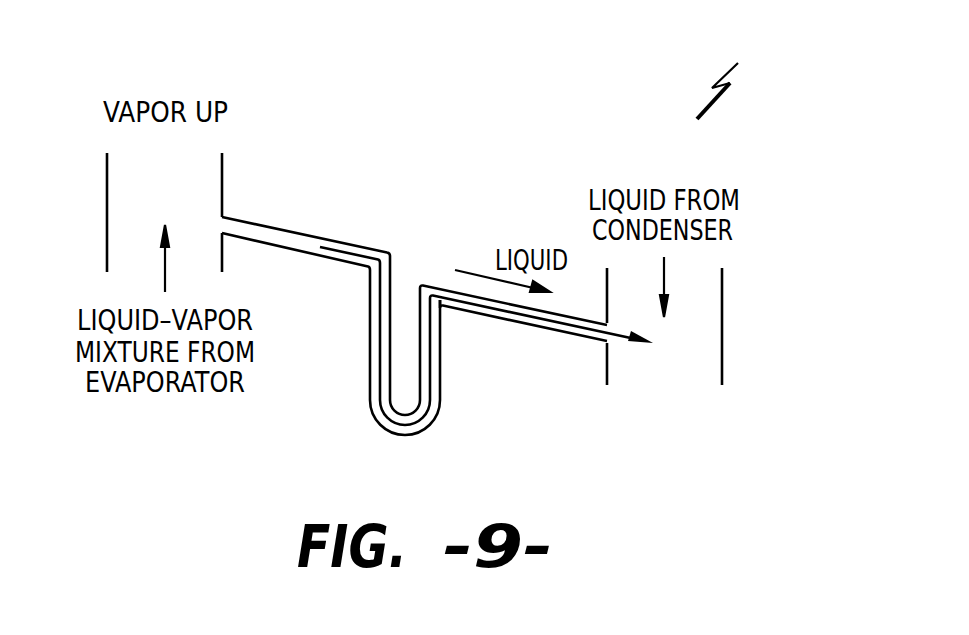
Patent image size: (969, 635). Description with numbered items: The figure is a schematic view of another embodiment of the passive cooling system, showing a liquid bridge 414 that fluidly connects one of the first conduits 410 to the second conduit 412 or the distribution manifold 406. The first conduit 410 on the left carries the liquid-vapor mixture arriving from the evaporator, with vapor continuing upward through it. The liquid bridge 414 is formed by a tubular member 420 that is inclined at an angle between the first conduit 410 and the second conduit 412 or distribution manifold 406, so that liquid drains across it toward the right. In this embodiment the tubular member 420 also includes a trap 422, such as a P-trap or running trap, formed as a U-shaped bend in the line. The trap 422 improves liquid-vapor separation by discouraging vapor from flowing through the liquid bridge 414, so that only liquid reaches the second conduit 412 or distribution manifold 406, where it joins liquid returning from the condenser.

The first conduit 410 is at (107, 207).
The tubular member 420 is at (305, 232).
The trap 422 is at (418, 432).
The second conduit 412 is at (732, 326).
The distribution manifold 406 is at (723, 335).
The liquid bridge 414 is at (738, 72).